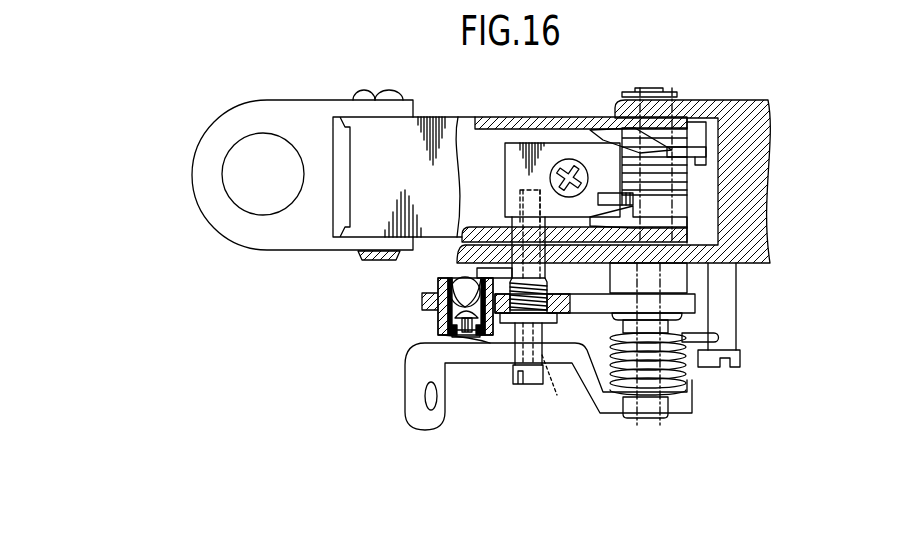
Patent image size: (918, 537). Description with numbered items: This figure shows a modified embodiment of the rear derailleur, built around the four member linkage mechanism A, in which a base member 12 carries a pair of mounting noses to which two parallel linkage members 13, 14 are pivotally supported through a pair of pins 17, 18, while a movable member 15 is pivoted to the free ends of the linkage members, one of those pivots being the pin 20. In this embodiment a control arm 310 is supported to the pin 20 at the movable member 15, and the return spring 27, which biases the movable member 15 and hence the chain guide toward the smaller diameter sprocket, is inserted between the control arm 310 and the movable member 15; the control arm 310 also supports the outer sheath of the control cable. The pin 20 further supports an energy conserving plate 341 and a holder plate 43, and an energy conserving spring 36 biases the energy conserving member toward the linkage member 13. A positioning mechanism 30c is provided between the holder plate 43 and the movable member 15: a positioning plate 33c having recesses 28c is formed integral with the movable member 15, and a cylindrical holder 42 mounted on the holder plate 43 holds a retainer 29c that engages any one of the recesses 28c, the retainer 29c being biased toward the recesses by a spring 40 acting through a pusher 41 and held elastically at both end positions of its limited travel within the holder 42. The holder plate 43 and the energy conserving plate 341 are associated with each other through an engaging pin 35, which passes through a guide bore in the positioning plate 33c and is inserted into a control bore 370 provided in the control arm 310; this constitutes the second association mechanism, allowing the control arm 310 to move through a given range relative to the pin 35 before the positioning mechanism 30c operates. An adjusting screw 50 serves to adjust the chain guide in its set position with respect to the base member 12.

The base member 12 is at (270, 250).
The linkage member 13 is at (456, 140).
The linkage member 14 is at (513, 133).
The movable member 15 is at (705, 105).
The pin 17 is at (392, 91).
The pin 18 is at (362, 92).
The pin 20 is at (638, 419).
The return spring 27 is at (675, 393).
The recesses 28c is at (455, 280).
The retainer 29c is at (443, 281).
The positioning mechanism 30c is at (370, 262).
The positioning plate 33c is at (483, 222).
The engaging pin 35 is at (530, 387).
The energy conserving spring 36 is at (640, 157).
The spring 40 is at (432, 345).
The pusher 41 is at (462, 338).
The cylindrical holder 42 is at (437, 320).
The holder plate 43 is at (434, 302).
The adjusting screw 50 is at (572, 159).
The control arm 310 is at (505, 347).
The energy conserving plate 341 is at (538, 143).
The control bore 370 is at (547, 363).
The linkage mechanism A is at (648, 91).